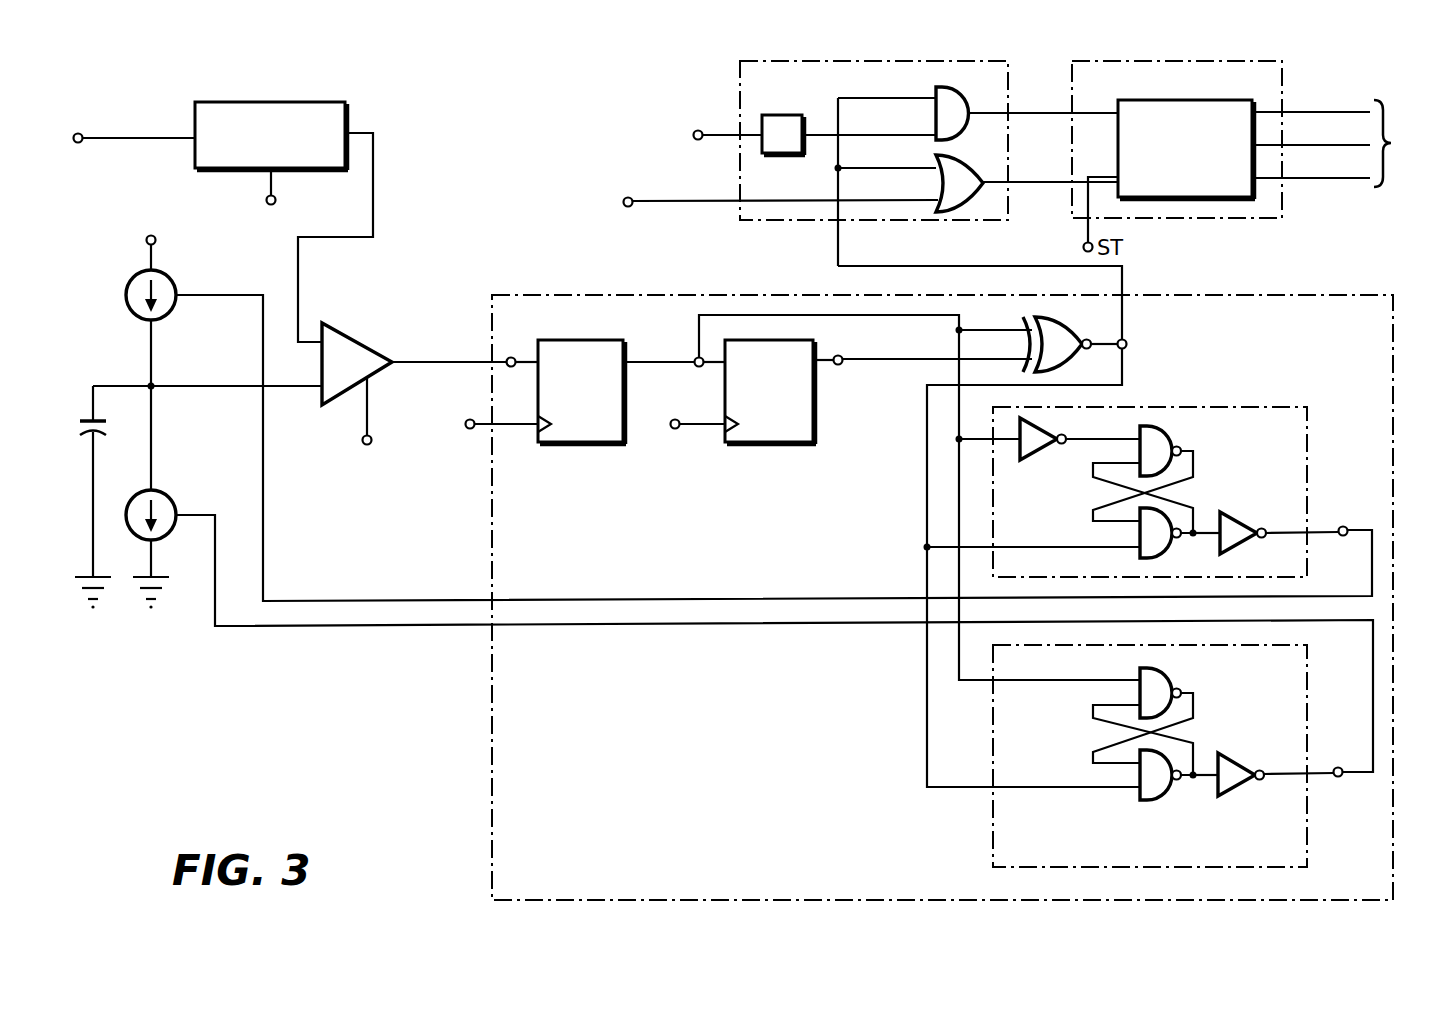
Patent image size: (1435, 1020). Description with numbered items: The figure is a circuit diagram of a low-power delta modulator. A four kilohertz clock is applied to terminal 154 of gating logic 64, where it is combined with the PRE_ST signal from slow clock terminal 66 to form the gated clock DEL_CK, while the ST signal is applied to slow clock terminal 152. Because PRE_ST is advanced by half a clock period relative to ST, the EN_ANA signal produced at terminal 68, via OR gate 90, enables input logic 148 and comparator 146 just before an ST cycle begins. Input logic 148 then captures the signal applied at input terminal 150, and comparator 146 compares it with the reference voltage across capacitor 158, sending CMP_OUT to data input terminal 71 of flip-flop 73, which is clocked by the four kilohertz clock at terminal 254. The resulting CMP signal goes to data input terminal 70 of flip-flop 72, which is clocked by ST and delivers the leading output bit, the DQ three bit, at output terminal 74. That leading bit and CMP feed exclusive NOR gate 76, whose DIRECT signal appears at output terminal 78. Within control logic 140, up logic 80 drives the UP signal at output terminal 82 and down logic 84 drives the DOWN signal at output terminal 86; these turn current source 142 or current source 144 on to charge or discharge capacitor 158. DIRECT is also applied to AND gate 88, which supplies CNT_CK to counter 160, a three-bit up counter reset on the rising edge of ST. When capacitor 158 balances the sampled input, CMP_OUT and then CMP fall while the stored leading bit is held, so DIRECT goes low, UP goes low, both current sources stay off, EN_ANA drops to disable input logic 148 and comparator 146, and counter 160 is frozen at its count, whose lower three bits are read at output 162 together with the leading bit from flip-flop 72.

The gating logic 64 is at (785, 115).
The slow clock terminal 66 is at (627, 197).
The terminal 68 is at (1034, 184).
The data input terminal 70 is at (698, 367).
The data input terminal 71 is at (513, 357).
The flip-flop 72 is at (812, 348).
The flip-flop 73 is at (606, 341).
The output terminal 74 is at (842, 364).
The exclusive NOR gate 76 is at (1074, 306).
The output terminal 78 is at (1125, 338).
The up logic 80 is at (1322, 410).
The output terminal 82 is at (1355, 500).
The down logic 84 is at (1317, 674).
The output terminal 86 is at (1350, 740).
The AND gate 88 is at (972, 78).
The OR gate 90 is at (972, 145).
The control logic 140 is at (1322, 292).
The current source 142 is at (176, 290).
The current source 144 is at (176, 509).
The comparator 146 is at (348, 336).
The input logic 148 is at (321, 78).
The input terminal 150 is at (84, 142).
The slow clock terminal 152 is at (672, 417).
The terminal 154 is at (716, 106).
The capacitor 158 is at (96, 436).
The counter 160 is at (1283, 70).
The output 162 is at (1343, 137).
The terminal 254 is at (467, 419).